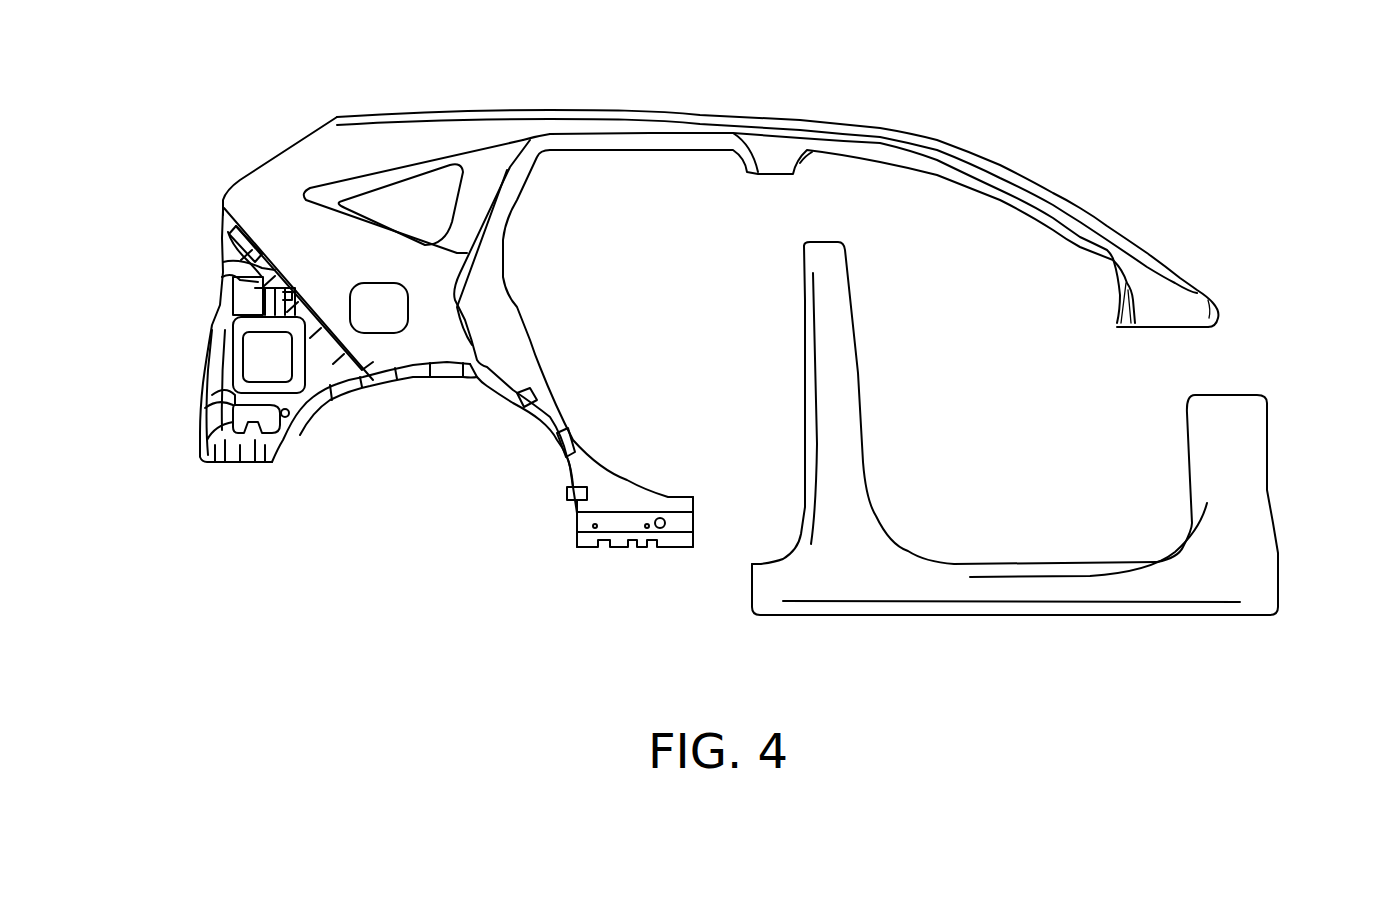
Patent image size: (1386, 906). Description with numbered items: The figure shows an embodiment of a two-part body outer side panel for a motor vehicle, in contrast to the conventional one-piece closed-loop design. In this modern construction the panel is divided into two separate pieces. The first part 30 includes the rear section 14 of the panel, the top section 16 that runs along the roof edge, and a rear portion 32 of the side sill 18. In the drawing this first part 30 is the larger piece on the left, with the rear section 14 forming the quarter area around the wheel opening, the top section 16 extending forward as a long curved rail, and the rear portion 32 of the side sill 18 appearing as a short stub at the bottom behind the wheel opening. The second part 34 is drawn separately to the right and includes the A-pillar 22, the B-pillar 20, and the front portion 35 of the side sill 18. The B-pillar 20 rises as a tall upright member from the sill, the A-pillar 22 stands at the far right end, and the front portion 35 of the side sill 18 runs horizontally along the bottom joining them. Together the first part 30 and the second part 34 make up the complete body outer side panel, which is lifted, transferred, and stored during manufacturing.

The rear section 14 is at (417, 380).
The top section 16 is at (937, 140).
The side sill 18 is at (665, 530).
The B-pillar 20 is at (828, 452).
The A-pillar 22 is at (1230, 465).
The first part 30 is at (222, 235).
The rear portion of the side sill 32 is at (622, 523).
The second part 34 is at (1250, 513).
The front portion of the side sill 35 is at (1038, 587).